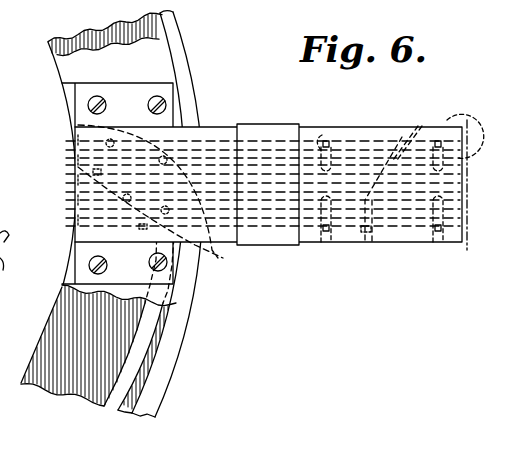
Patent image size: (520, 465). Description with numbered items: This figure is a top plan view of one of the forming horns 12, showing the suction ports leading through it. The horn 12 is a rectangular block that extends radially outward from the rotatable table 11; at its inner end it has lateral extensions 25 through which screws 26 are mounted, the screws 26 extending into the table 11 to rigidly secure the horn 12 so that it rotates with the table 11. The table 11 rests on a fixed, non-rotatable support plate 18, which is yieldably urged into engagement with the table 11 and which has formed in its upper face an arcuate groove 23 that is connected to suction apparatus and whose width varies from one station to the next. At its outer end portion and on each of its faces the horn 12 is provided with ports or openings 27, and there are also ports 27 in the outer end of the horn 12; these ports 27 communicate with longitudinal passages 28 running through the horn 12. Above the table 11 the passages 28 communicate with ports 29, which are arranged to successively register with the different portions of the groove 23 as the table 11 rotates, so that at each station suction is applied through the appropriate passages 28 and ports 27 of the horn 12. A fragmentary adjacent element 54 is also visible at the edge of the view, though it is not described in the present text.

The table 11 is at (158, 62).
The forming horn 12 is at (374, 125).
The support plate 18 is at (176, 375).
The arcuate groove 23 is at (148, 322).
The lateral extensions 25 is at (172, 112).
The screws 26 is at (105, 101).
The ports 27 is at (329, 141).
The longitudinal passages 28 is at (366, 257).
The ports 29 is at (76, 128).
The partial element 54 is at (15, 250).